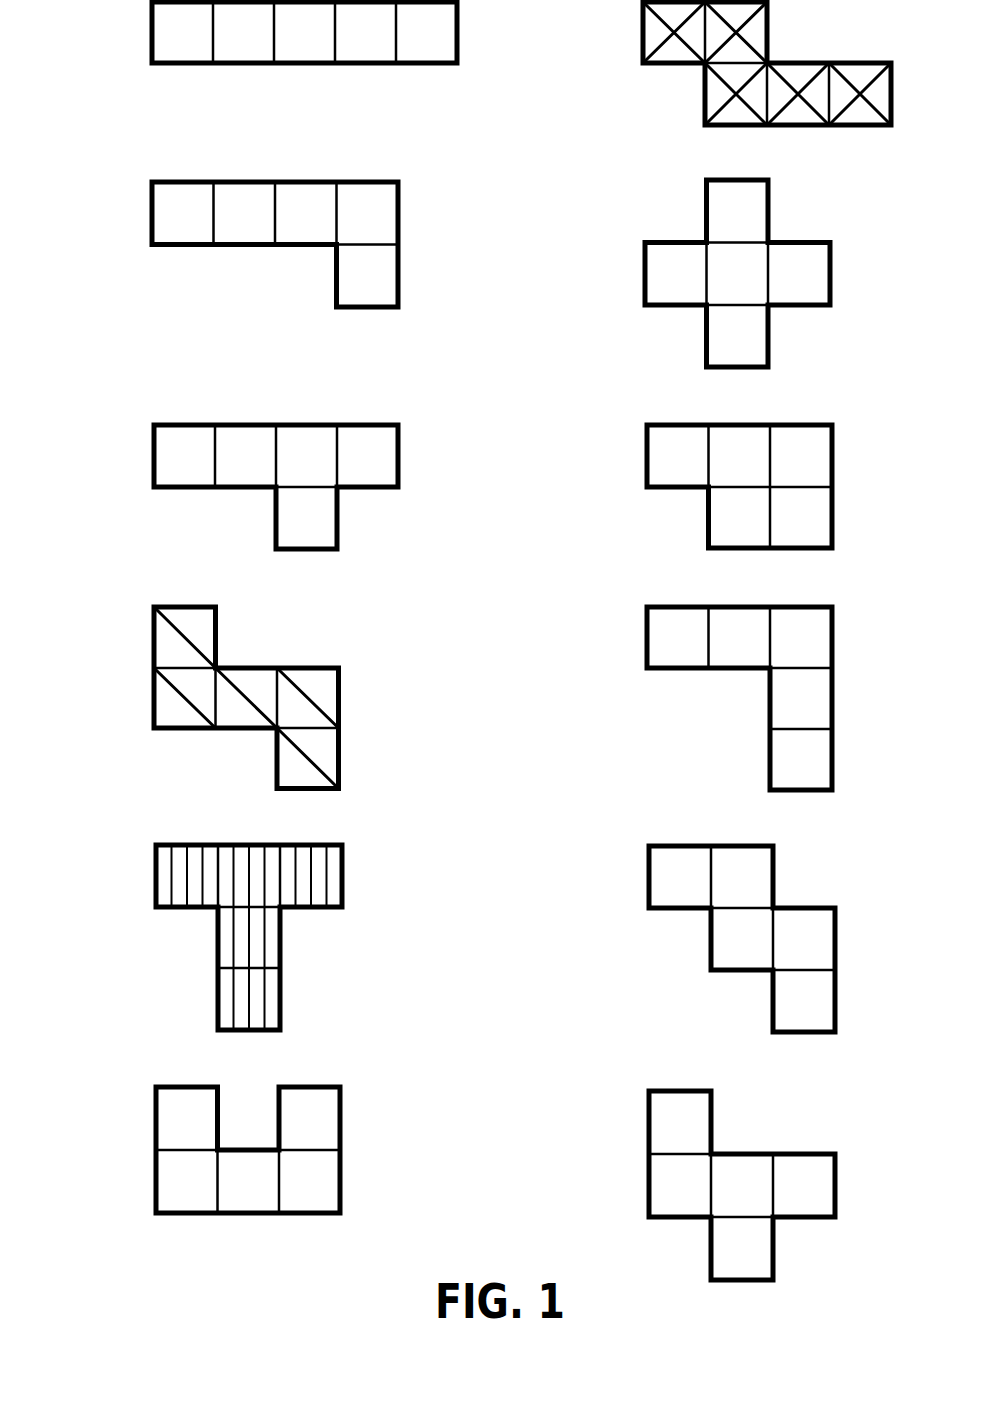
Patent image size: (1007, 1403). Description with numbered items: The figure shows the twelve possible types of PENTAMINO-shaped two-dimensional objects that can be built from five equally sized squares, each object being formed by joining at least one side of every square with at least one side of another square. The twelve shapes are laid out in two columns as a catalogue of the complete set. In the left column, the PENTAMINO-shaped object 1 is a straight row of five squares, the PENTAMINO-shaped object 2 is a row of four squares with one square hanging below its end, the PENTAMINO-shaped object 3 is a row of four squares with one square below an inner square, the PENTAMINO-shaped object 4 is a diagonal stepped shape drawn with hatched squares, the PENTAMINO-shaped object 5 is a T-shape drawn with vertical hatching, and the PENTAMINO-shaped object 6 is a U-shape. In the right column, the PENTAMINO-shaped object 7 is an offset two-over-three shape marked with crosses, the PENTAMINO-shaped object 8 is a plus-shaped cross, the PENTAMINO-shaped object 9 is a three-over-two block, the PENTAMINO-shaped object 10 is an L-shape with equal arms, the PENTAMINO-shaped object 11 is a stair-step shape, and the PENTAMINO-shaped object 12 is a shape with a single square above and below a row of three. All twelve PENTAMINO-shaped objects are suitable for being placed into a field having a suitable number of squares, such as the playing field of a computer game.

The PENTAMINO-shaped object 1 is at (152, 22).
The PENTAMINO-shaped object 2 is at (152, 203).
The PENTAMINO-shaped object 3 is at (154, 447).
The PENTAMINO-shaped object 4 is at (154, 637).
The PENTAMINO-shaped object 5 is at (156, 868).
The PENTAMINO-shaped object 6 is at (156, 1105).
The PENTAMINO-shaped object 7 is at (643, 30).
The PENTAMINO-shaped object 8 is at (705, 218).
The PENTAMINO-shaped object 9 is at (647, 455).
The PENTAMINO-shaped object 10 is at (647, 633).
The PENTAMINO-shaped object 11 is at (649, 870).
The PENTAMINO-shaped object 12 is at (649, 1140).